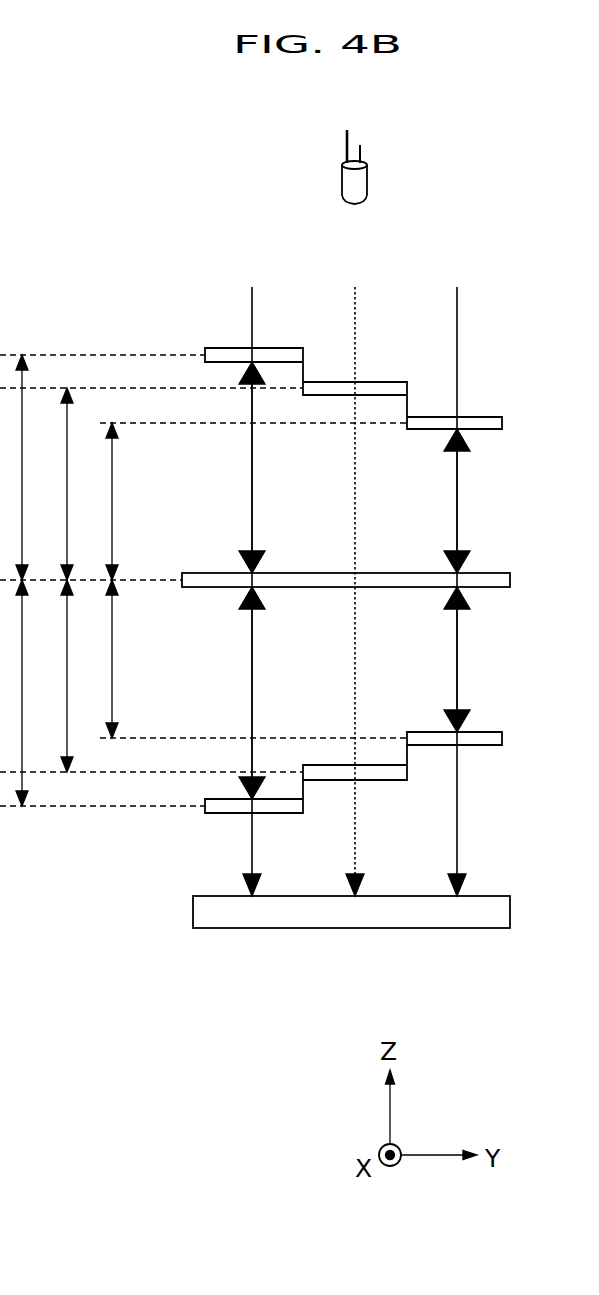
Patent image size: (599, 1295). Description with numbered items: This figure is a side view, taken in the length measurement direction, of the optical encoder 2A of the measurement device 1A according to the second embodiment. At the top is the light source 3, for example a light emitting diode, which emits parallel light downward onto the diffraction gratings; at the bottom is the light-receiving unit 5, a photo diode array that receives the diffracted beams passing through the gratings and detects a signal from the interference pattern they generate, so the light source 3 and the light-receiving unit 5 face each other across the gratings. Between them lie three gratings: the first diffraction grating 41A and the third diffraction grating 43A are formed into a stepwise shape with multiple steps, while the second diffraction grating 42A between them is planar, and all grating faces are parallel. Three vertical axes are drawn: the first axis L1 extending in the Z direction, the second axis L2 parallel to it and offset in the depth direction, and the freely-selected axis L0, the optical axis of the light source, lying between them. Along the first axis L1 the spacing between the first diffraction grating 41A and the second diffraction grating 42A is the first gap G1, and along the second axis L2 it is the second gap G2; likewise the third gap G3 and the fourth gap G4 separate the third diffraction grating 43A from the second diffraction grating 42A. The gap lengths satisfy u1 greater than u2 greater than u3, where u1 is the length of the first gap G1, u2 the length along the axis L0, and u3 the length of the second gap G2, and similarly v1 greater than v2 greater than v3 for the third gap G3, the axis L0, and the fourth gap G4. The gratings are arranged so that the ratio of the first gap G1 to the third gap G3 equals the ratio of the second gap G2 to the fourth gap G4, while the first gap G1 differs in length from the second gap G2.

The measurement device 1A is at (125, 190).
The optical encoder 2A is at (192, 230).
The light source 3 is at (367, 180).
The first diffraction grating 41A is at (207, 348).
The second diffraction grating 42A is at (222, 573).
The third diffraction grating 43A is at (228, 814).
The light-receiving unit 5 is at (425, 928).
The first axis L1 is at (253, 575).
The freely-selected axis L0 is at (357, 575).
The second axis L2 is at (462, 575).
The first gap G1 is at (269, 467).
The second gap G2 is at (474, 501).
The third gap G3 is at (269, 693).
The fourth gap G4 is at (474, 659).
The length of the first gap u1 is at (38, 467).
The length of the gap along the freely-selected axis u2 is at (83, 484).
The length of the second gap u3 is at (128, 501).
The length of the third gap v1 is at (37, 693).
The length of the gap along the freely-selected axis v2 is at (83, 676).
The length of the fourth gap v3 is at (128, 659).